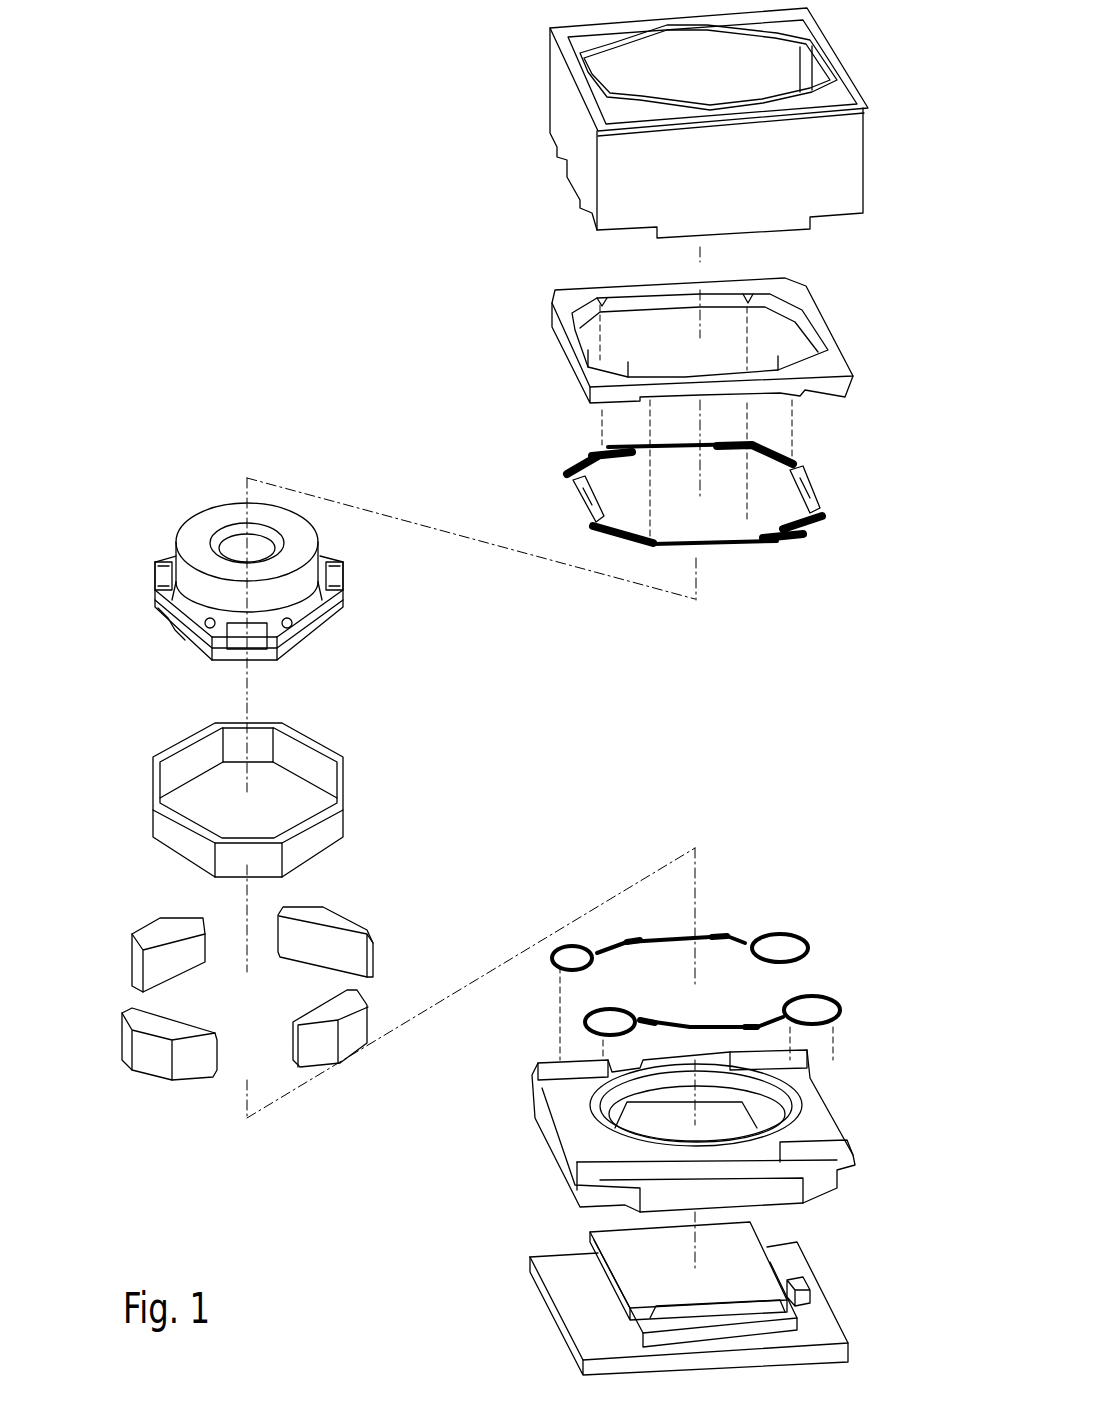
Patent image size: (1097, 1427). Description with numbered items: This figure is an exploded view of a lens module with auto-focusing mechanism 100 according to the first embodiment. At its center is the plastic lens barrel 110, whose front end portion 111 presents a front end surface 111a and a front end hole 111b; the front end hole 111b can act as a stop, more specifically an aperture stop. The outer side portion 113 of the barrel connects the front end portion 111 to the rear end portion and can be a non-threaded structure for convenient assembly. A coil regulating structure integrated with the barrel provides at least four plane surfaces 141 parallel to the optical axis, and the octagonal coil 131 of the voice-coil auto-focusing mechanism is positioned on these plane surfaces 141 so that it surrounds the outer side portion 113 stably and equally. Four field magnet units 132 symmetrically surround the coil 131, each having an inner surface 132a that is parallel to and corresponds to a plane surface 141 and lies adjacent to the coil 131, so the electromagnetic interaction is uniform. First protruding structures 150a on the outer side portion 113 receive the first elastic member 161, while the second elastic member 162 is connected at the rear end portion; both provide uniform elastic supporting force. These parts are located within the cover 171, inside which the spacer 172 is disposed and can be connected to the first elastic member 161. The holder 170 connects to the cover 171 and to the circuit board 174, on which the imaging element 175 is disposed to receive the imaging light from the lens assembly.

The lens module with auto-focusing mechanism 100 is at (222, 91).
The plastic lens barrel 110 is at (200, 527).
The front end portion 111 is at (497, 556).
The front end surface 111a is at (304, 544).
The front end hole 111b is at (253, 558).
The outer side portion 113 is at (152, 595).
The first protruding structures 150a is at (165, 623).
The plane surfaces 141 is at (295, 619).
The coil 131 is at (330, 829).
The field magnet units 132 is at (345, 910).
The inner surface 132a is at (343, 952).
The first elastic member 161 is at (813, 507).
The second elastic member 162 is at (797, 934).
The holder 170 is at (853, 1168).
The cover 171 is at (840, 97).
The spacer 172 is at (836, 360).
The circuit board 174 is at (843, 1354).
The imaging element 175 is at (600, 1243).